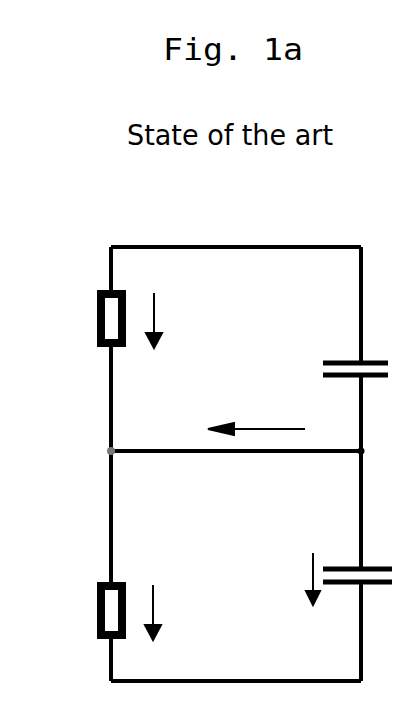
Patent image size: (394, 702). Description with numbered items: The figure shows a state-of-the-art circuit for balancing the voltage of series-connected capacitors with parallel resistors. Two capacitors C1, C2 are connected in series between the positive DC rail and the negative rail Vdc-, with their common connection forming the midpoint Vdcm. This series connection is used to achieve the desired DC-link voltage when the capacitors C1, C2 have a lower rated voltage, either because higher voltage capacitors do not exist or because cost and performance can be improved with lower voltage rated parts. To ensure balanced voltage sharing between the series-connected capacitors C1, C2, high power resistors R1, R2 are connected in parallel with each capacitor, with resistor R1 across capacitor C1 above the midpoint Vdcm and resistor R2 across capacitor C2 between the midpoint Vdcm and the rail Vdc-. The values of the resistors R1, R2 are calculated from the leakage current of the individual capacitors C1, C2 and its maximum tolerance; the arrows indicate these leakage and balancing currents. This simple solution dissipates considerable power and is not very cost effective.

The high power resistor R1 is at (89, 318).
The high power resistor R2 is at (90, 610).
The capacitor C1 is at (330, 370).
The capacitor C2 is at (332, 575).
The DC midpoint Vdcm is at (322, 470).
The negative DC rail Vdc- is at (329, 668).